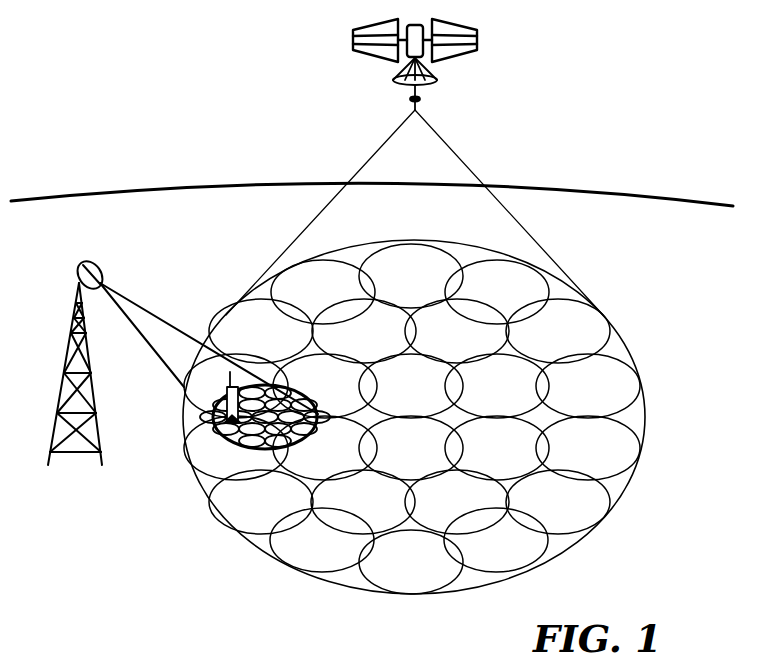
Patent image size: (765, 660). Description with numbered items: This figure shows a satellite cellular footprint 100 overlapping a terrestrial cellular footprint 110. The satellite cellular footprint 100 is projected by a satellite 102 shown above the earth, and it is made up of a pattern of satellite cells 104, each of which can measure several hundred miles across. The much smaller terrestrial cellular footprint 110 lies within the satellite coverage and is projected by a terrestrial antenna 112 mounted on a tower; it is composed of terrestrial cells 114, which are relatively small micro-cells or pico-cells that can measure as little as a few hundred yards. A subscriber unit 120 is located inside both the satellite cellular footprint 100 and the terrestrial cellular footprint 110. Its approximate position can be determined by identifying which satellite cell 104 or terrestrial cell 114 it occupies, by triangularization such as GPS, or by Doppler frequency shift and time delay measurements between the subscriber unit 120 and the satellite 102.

The satellite cellular footprint 100 is at (628, 482).
The satellite 102 is at (353, 40).
The satellite cells 104 is at (413, 248).
The terrestrial cellular footprint 110 is at (222, 453).
The terrestrial antenna 112 is at (72, 310).
The terrestrial cells 114 is at (227, 422).
The subscriber unit 120 is at (227, 390).